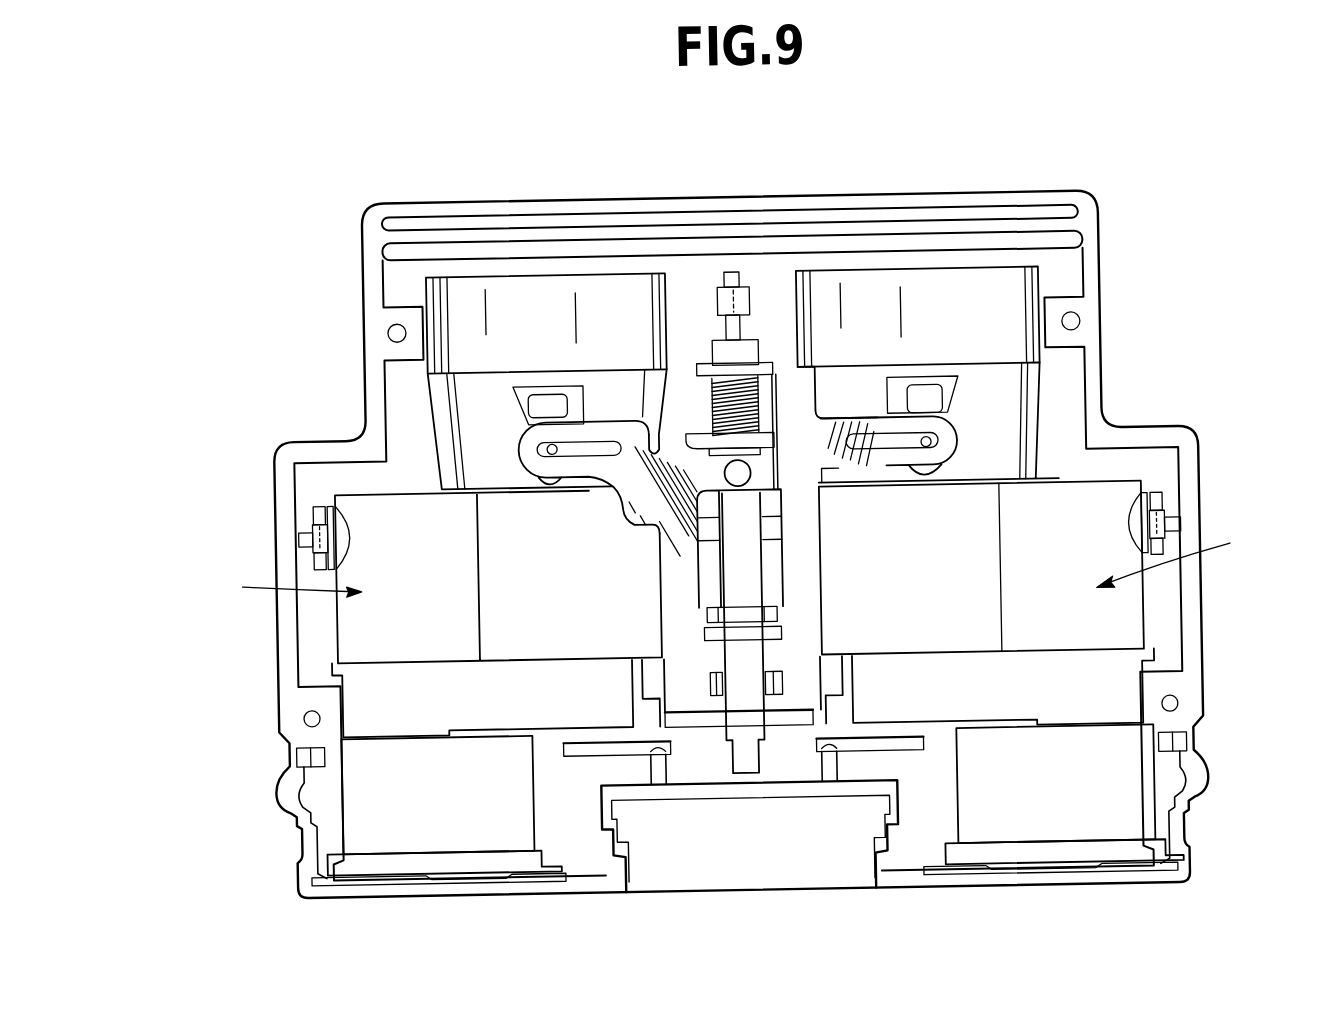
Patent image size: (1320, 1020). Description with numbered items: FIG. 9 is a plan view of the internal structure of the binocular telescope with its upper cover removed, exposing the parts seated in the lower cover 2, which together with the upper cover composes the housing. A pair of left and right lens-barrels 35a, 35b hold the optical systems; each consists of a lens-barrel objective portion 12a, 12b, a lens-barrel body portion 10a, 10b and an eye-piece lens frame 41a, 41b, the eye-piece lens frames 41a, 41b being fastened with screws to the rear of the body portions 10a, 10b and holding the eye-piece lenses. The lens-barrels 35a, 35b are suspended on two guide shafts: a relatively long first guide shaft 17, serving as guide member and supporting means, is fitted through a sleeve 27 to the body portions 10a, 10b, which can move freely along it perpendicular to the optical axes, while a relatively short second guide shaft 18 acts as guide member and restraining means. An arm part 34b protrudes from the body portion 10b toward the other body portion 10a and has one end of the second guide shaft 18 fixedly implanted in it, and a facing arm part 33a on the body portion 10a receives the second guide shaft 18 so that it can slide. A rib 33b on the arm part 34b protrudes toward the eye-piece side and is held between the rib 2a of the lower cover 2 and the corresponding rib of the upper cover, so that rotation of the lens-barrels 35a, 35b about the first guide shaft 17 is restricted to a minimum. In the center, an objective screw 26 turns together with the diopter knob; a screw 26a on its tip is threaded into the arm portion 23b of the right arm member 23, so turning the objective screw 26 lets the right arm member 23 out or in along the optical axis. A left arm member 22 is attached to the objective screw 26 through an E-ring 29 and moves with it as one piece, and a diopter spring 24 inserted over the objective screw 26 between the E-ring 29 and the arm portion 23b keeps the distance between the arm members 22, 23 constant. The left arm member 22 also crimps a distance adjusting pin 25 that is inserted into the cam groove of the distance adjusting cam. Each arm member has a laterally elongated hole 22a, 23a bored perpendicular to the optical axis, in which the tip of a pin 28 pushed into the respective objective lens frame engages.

The lower cover 2 is at (1093, 285).
The rib 2a is at (665, 762).
The lens-barrel body portion 10a is at (1123, 614).
The lens-barrel body portion 10b is at (355, 620).
The lens-barrel objective portion 12a is at (1024, 358).
The lens-barrel objective portion 12b is at (457, 355).
The first guide shaft 17 is at (1160, 518).
The second guide shaft 18 is at (795, 718).
The left arm member 22 is at (605, 337).
The laterally elongated hole 22a is at (600, 438).
The right arm member 23 is at (952, 442).
The laterally elongated hole 23a is at (873, 468).
The arm portion 23b is at (773, 400).
The diopter spring 24 is at (739, 473).
The distance adjusting pin 25 is at (782, 428).
The objective screw 26 is at (742, 772).
The screw 26a is at (732, 352).
The sleeve 27 is at (315, 509).
The pin 28 is at (554, 441).
The E-ring 29 is at (825, 436).
The arm part 33a is at (843, 731).
The rib 33b is at (622, 748).
The arm part 34b is at (560, 738).
The lens-barrel 35a is at (1192, 554).
The lens-barrel 35b is at (272, 587).
The eye-piece lens frame 41a is at (1145, 862).
The eye-piece lens frame 41b is at (340, 865).